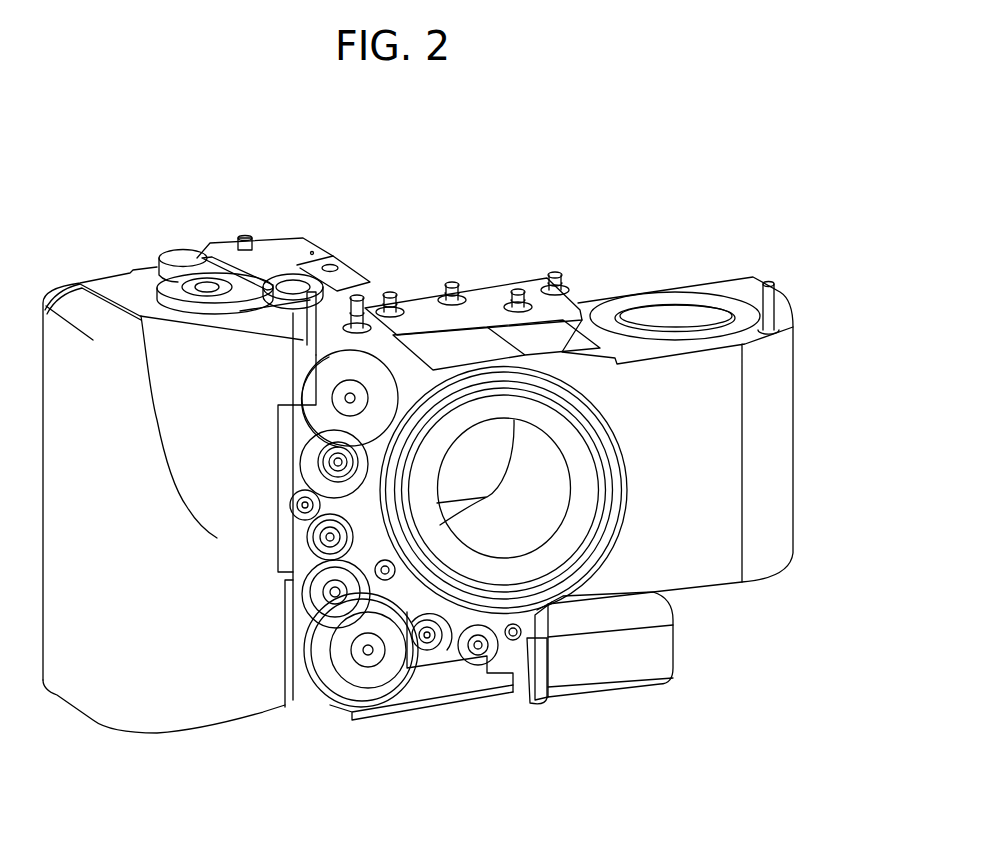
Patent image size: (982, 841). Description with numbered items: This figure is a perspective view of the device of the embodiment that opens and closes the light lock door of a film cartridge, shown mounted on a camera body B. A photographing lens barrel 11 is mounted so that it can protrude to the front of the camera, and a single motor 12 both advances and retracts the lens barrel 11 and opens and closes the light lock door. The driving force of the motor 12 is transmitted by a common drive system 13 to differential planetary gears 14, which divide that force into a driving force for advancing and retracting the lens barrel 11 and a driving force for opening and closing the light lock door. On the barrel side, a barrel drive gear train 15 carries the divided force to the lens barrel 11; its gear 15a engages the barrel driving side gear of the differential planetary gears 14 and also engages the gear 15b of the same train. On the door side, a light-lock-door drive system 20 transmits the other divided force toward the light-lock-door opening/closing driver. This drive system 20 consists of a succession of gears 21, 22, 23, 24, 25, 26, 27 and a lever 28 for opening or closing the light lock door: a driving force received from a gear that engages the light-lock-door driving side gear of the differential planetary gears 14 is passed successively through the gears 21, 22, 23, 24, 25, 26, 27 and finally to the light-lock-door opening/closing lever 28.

The camera body B is at (780, 373).
The photographing lens barrel 11 is at (592, 488).
The motor 12 is at (664, 640).
The common drive system 13 is at (542, 712).
The differential planetary gears 14 is at (348, 675).
The barrel drive gear train 15 is at (242, 610).
The gear 15a is at (312, 607).
The gear 15b is at (310, 591).
The light-lock-door drive system 20 is at (176, 500).
The gear 21 is at (376, 568).
The gear 22 is at (288, 508).
The gear 23 is at (312, 457).
The gear 24 is at (314, 391).
The gear 25 is at (305, 346).
The gear 26 is at (287, 274).
The gear 27 is at (163, 269).
The light-lock-door opening/closing lever 28 is at (163, 262).